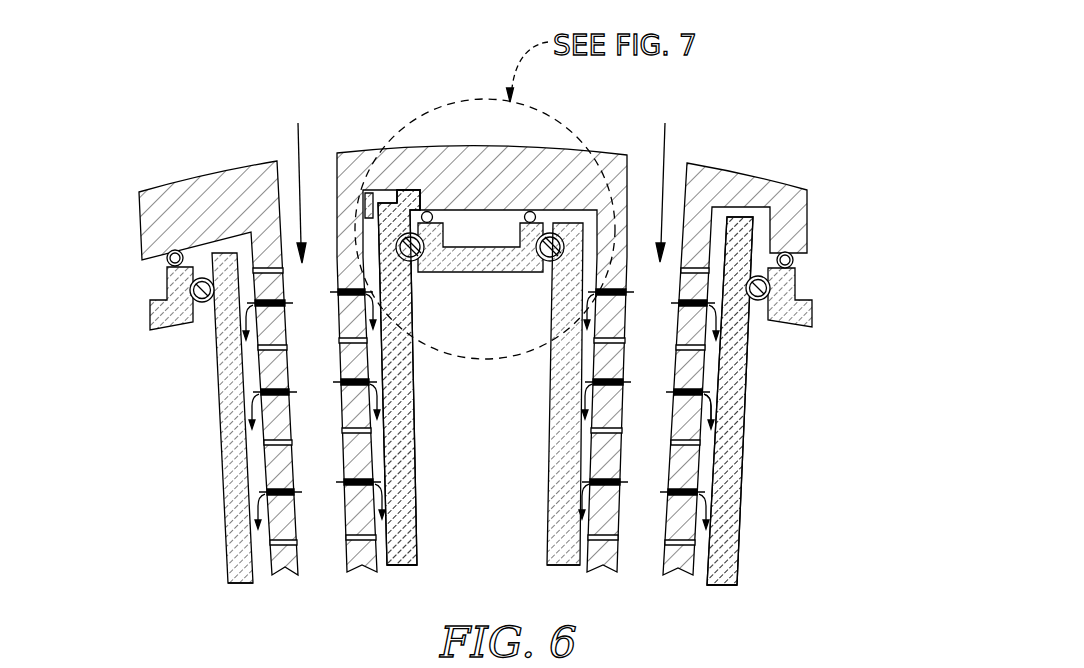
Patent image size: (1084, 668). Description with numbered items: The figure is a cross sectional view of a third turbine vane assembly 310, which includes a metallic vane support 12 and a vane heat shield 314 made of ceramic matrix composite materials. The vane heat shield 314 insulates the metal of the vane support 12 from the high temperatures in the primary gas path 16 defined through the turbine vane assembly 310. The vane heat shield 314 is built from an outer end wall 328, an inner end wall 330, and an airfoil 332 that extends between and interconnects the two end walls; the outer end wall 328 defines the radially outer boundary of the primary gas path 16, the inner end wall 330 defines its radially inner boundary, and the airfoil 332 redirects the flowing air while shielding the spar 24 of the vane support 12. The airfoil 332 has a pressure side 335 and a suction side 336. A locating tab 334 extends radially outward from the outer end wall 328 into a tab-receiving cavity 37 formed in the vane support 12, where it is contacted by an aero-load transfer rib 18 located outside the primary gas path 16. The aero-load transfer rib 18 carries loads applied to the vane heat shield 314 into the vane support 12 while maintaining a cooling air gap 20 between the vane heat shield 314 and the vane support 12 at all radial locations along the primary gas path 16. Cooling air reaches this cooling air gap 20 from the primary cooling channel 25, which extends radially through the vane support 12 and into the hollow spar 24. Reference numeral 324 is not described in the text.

The turbine vane assembly 310 is at (476, 333).
The vane support 12 is at (128, 205).
The primary cooling channel 25 is at (290, 157).
The aero-load transfer rib 18 is at (367, 192).
The locating tab 334 is at (396, 203).
The tab-receiving cavity 37 is at (422, 192).
The inner end wall 330 is at (485, 274).
The pressure side 335 is at (412, 427).
The suction side 336 is at (550, 492).
The cooling air gap 20 is at (262, 570).
The spar 24 is at (718, 462).
The airfoil 332 is at (457, 401).
The primary gas path 16 is at (148, 418).
The inner surface 324 is at (148, 418).
The vane heat shield 314 is at (148, 418).
The outer end wall 328 is at (168, 333).